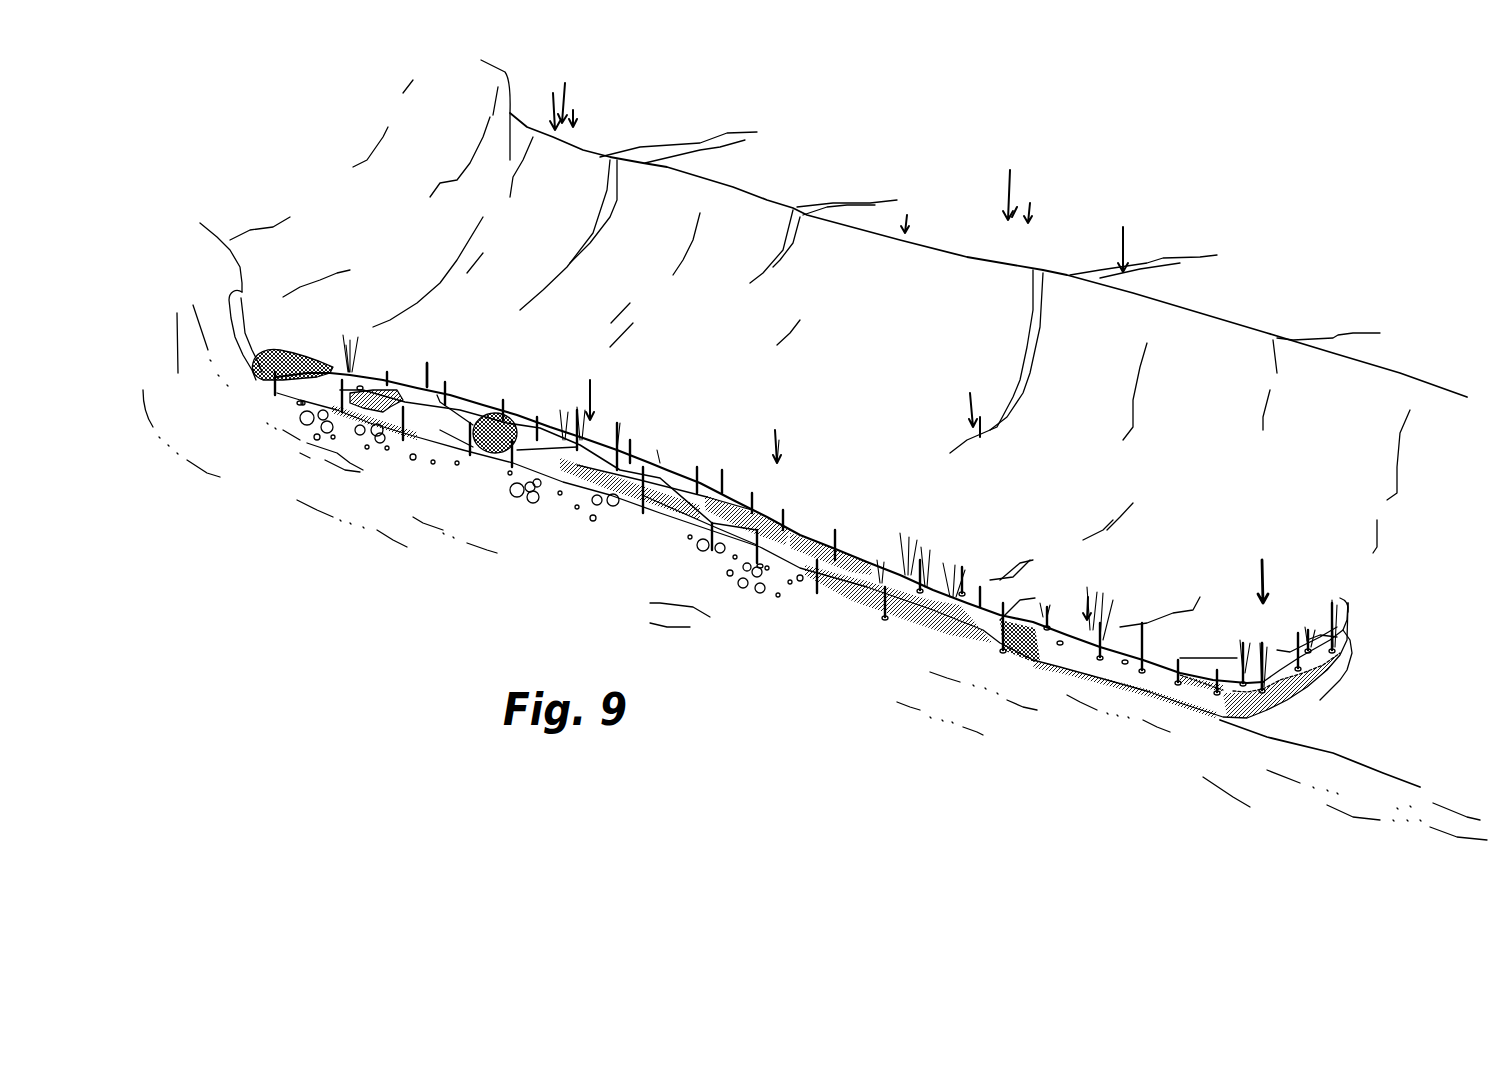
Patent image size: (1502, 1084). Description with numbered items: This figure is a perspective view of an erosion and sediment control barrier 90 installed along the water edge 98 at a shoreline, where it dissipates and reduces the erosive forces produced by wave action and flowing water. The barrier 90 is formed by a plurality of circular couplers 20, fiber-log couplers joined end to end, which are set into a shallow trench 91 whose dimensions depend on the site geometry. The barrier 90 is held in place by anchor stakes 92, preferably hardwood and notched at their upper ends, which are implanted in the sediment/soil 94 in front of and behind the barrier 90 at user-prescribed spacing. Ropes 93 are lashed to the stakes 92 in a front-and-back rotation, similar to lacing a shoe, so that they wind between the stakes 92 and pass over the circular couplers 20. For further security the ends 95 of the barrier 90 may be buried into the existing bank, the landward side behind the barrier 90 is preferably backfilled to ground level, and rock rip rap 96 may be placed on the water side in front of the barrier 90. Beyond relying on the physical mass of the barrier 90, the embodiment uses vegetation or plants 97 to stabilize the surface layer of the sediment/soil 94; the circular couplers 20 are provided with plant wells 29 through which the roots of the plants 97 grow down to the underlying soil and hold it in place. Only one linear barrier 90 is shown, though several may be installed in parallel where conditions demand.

The circular coupler 20 is at (298, 402).
The plant well 29 is at (364, 390).
The erosion and sediment control barrier 90 is at (651, 406).
The shallow trench 91 is at (228, 340).
The stake 92 is at (347, 377).
The rope 93 is at (410, 443).
The sediment/soil 94 is at (1340, 598).
The ends of barrier 95 is at (1337, 637).
The rock rip rap 96 is at (262, 406).
The plants 97 is at (427, 382).
The water edge 98 is at (1387, 775).